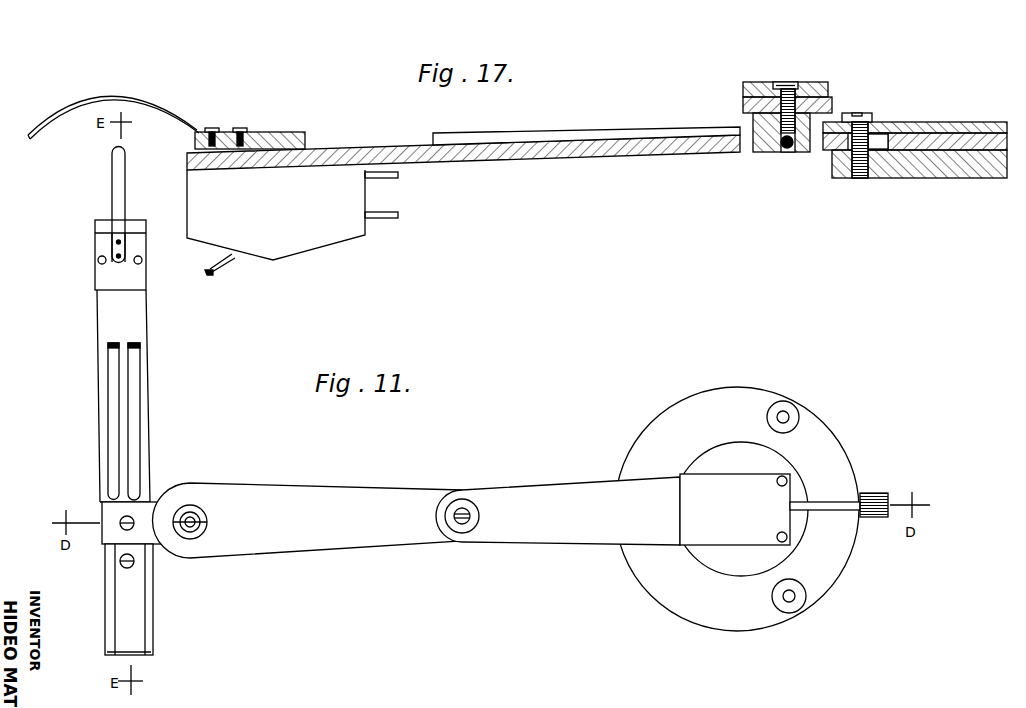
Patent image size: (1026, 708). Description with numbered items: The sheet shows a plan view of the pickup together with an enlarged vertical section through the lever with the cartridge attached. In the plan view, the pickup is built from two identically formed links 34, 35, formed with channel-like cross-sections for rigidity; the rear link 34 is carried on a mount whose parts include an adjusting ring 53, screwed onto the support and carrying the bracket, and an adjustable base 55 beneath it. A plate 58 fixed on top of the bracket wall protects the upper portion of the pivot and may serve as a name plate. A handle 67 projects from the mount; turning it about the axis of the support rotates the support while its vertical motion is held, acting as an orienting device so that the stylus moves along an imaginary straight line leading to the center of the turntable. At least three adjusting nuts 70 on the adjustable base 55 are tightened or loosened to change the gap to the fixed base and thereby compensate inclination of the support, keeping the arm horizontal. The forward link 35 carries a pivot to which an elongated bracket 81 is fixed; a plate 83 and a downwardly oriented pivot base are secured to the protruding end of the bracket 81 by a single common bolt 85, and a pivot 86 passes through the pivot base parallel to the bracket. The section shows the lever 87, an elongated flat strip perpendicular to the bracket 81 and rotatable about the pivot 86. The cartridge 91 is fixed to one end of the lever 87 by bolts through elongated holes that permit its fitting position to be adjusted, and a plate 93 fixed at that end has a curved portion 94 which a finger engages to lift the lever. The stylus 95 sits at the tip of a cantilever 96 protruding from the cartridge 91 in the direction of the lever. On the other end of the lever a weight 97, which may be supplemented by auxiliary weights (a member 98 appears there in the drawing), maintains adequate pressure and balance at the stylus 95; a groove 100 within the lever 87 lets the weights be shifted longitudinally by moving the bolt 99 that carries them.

In FIG. 11, the link 34 is at (515, 487).
In FIG. 11, the link 35 is at (311, 488).
In FIG. 11, the adjusting ring 53 is at (741, 509).
In FIG. 11, the adjustable base 55 is at (661, 588).
In FIG. 11, the plate 58 is at (735, 509).
In FIG. 11, the handle 67 is at (848, 512).
In FIG. 11, the adjusting nuts 70 is at (790, 407).
In FIG. 17, the elongated bracket 81 is at (818, 86).
In FIG. 11, the elongated bracket 81 is at (108, 531).
In FIG. 17, the plate 83 is at (743, 103).
In FIG. 17, the bolt 85 is at (789, 95).
In FIG. 17, the pivot 86 is at (787, 148).
In FIG. 17, the lever 87 is at (525, 147).
In FIG. 11, the lever 87 is at (147, 335).
In FIG. 17, the cartridge 91 is at (292, 215).
In FIG. 17, the plate 93 is at (283, 133).
In FIG. 11, the plate 93 is at (147, 244).
In FIG. 17, the curved portion 94 is at (188, 127).
In FIG. 11, the curved portion 94 is at (124, 191).
In FIG. 17, the stylus 95 is at (213, 275).
In FIG. 17, the cantilever 96 is at (233, 259).
In FIG. 17, the weight 97 is at (923, 178).
In FIG. 11, the weight 97 is at (147, 579).
In FIG. 17, the plate 98 is at (925, 125).
In FIG. 11, the plate 98 is at (140, 614).
In FIG. 17, the bolt 99 is at (860, 178).
In FIG. 17, the groove 100 is at (882, 137).